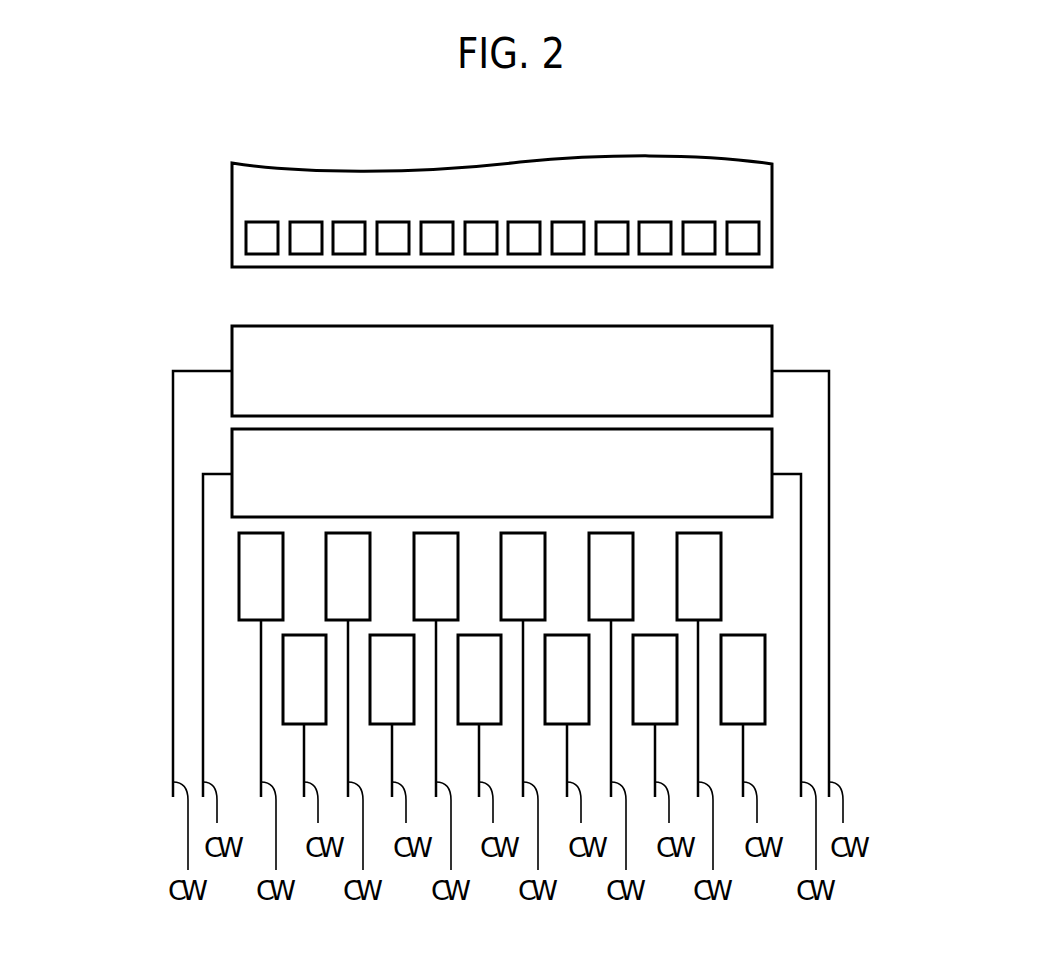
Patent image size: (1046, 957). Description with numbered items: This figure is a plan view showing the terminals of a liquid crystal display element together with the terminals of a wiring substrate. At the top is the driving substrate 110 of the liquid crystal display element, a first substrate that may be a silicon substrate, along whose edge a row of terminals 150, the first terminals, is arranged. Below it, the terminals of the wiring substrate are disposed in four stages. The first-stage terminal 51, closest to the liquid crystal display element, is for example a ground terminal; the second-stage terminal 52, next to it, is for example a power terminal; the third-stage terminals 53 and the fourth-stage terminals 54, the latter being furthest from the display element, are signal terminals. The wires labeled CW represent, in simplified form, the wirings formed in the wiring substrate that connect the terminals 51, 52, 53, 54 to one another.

The driving substrate 110 is at (764, 194).
The terminals 150 is at (253, 238).
The terminal 51 is at (764, 342).
The terminal 52 is at (764, 445).
The terminal 53 is at (245, 575).
The terminal 54 is at (290, 678).